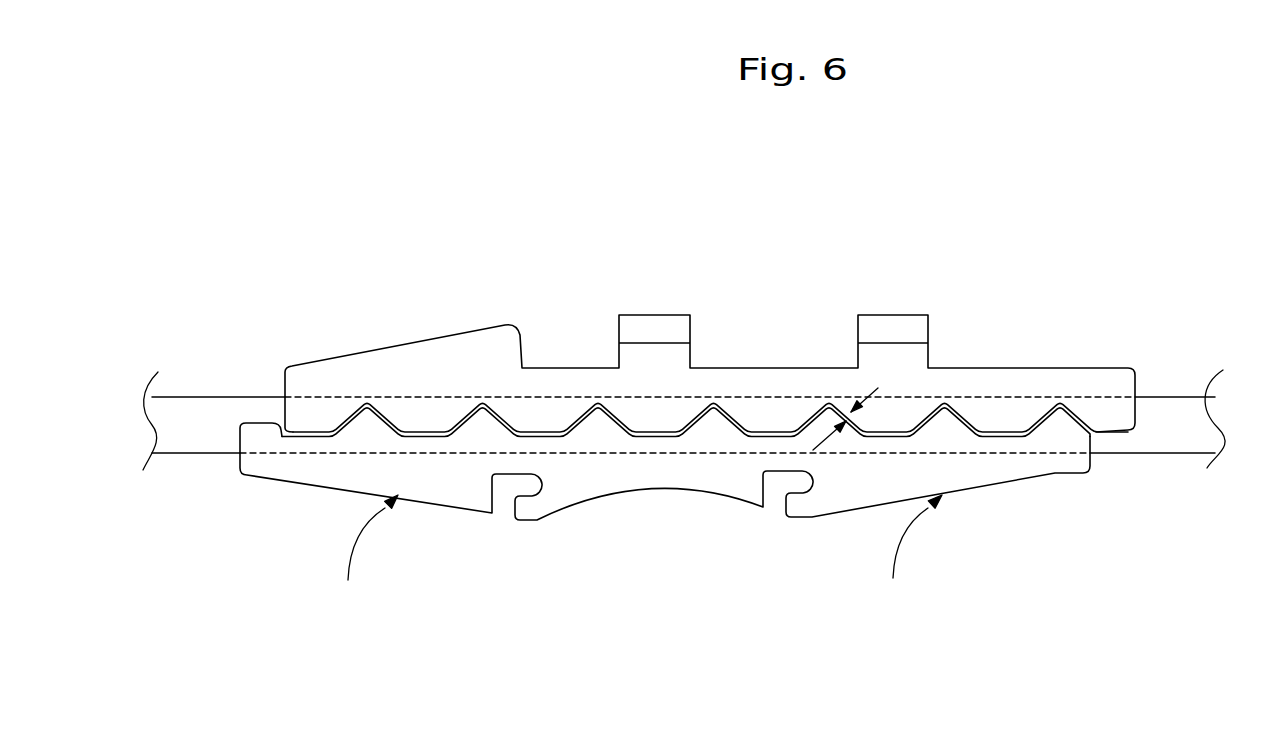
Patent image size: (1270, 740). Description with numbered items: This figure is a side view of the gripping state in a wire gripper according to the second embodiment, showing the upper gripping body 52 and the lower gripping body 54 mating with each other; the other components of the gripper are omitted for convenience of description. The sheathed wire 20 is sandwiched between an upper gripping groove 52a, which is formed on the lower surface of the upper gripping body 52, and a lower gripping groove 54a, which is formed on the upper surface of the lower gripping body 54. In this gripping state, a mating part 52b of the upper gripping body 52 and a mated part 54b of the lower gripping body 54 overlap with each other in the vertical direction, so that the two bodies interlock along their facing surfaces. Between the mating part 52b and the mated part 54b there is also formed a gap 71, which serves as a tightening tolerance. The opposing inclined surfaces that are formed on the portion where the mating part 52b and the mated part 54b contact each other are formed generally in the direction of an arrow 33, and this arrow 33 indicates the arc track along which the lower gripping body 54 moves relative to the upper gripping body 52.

The sheathed wire 20 is at (1172, 408).
The arrow 33 is at (360, 548).
The upper gripping body 52 is at (624, 327).
The upper gripping groove 52a is at (333, 397).
The mating part 52b is at (500, 420).
The lower gripping body 54 is at (651, 526).
The lower gripping groove 54a is at (377, 452).
The mated part 54b is at (668, 434).
The gap 71 is at (850, 418).